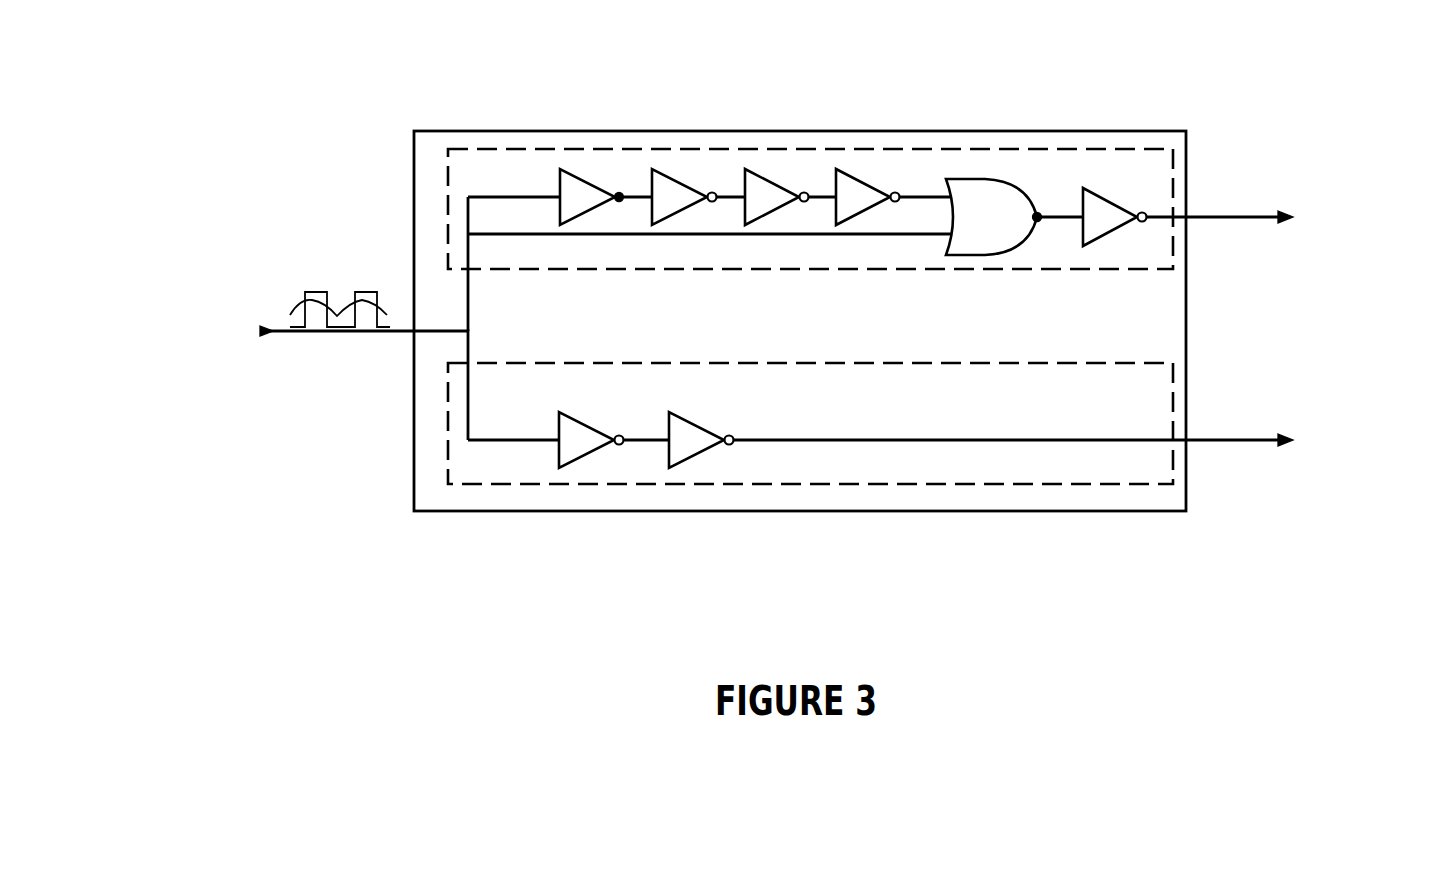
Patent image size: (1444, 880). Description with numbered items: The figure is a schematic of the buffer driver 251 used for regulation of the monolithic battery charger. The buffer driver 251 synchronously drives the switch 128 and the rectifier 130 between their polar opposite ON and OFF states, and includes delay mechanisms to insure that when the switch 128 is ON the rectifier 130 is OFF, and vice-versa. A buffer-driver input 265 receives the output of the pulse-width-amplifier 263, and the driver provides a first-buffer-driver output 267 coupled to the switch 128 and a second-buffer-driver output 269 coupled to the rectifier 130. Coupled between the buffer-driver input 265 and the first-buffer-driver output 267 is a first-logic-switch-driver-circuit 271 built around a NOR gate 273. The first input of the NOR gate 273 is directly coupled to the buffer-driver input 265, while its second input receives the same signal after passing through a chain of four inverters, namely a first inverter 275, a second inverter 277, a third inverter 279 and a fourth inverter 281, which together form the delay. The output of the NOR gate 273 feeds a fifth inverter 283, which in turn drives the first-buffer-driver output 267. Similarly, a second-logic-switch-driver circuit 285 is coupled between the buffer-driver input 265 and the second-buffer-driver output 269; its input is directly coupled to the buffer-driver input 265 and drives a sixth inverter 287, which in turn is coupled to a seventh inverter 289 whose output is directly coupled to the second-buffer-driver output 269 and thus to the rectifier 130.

The buffer driver 251 is at (872, 58).
The pulse-width-amplifier 263 is at (225, 346).
The buffer-driver input 265 is at (395, 331).
The first-logic-switch-driver-circuit 271 is at (905, 270).
The NOR gate 273 is at (985, 256).
The first inverter 275 is at (577, 178).
The second inverter 277 is at (679, 178).
The third inverter 279 is at (772, 178).
The fourth inverter 281 is at (865, 178).
The fifth inverter 283 is at (1113, 204).
The first-buffer-driver output 267 is at (1200, 217).
The switch 128 is at (1336, 236).
The second-logic-switch-driver circuit 285 is at (873, 485).
The sixth inverter 287 is at (580, 458).
The seventh inverter 289 is at (692, 456).
The second-buffer-driver output 269 is at (1200, 440).
The rectifier 130 is at (1328, 466).